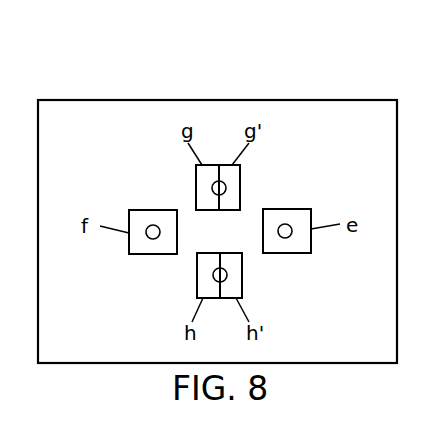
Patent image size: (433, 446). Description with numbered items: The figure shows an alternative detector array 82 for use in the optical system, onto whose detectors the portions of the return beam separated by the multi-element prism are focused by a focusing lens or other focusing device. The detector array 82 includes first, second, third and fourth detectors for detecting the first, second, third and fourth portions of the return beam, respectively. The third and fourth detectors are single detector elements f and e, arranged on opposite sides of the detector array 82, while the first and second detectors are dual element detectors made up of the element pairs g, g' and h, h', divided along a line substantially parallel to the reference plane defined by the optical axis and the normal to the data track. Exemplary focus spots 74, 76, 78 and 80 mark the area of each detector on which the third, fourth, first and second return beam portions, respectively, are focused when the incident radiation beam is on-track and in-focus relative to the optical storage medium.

The detector array 82 is at (156, 82).
The focus spot 74 is at (150, 226).
The focus spot 76 is at (289, 225).
The focus spot 78 is at (226, 186).
The focus spot 80 is at (227, 277).